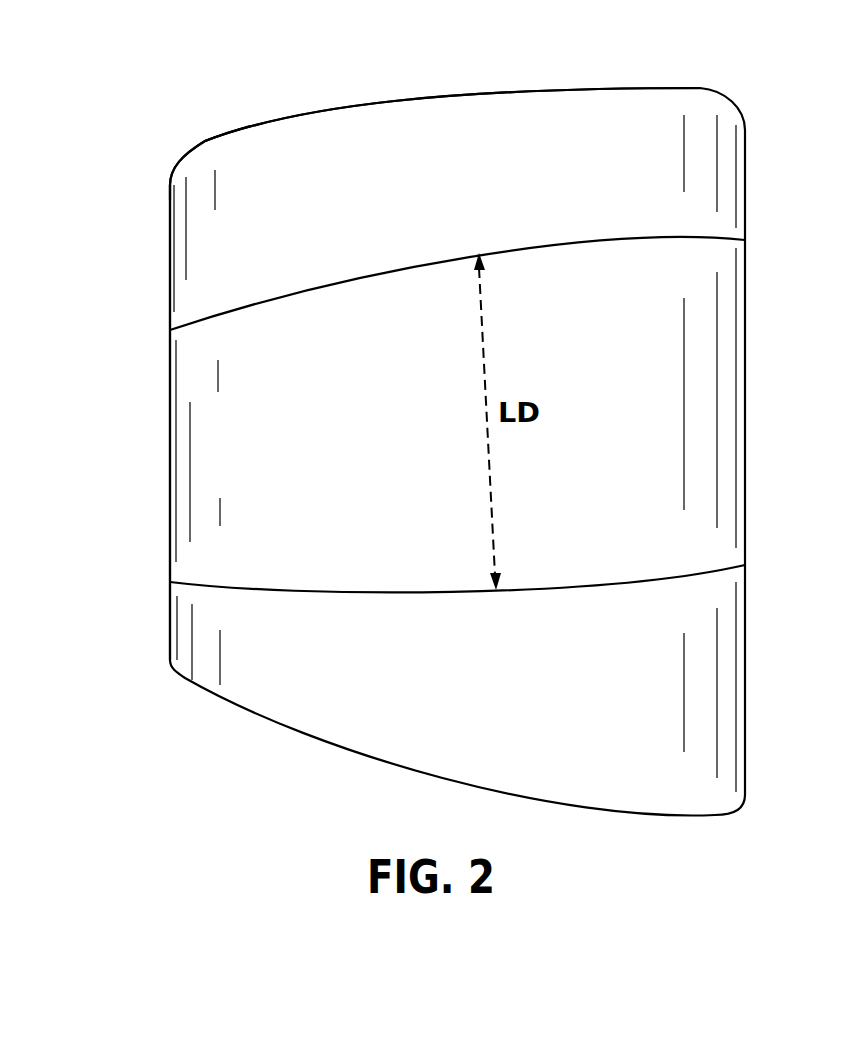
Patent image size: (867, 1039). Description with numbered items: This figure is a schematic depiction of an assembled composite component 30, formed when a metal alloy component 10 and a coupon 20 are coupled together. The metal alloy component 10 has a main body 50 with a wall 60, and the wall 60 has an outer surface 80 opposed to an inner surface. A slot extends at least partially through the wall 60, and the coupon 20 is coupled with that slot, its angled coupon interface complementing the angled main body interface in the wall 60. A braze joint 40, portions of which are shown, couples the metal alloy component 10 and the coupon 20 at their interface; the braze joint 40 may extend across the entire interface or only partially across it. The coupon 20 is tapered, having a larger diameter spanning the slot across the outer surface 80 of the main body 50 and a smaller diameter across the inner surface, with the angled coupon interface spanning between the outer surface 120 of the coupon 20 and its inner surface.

The metal alloy component 10 is at (258, 90).
The coupon 20 is at (153, 428).
The composite component 30 is at (118, 148).
The braze joint 40 is at (413, 253).
The main body 50 is at (183, 632).
The wall 60 is at (408, 125).
The outer surface 80 is at (513, 194).
The outer surface 120 is at (456, 405).